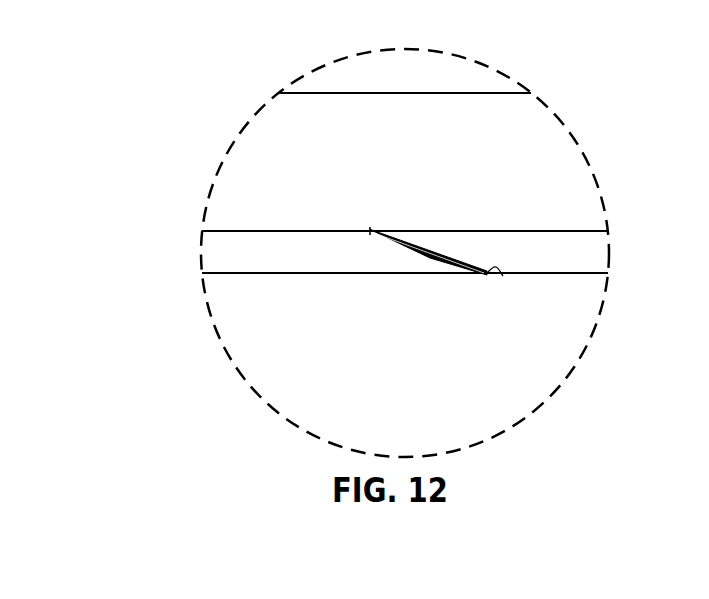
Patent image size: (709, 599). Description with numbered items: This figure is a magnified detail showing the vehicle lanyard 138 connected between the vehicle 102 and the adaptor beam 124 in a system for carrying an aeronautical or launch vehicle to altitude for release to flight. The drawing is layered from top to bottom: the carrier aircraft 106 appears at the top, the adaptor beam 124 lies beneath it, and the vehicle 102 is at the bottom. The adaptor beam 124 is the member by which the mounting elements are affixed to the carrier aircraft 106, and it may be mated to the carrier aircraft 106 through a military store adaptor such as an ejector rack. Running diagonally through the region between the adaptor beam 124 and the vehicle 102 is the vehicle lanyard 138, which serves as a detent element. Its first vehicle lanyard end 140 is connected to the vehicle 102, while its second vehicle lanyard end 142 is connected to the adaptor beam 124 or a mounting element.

The vehicle 102 is at (426, 350).
The carrier aircraft 106 is at (429, 85).
The adaptor beam 124 is at (433, 175).
The vehicle lanyard 138 is at (437, 256).
The first vehicle lanyard end 140 is at (370, 231).
The second vehicle lanyard end 142 is at (500, 273).